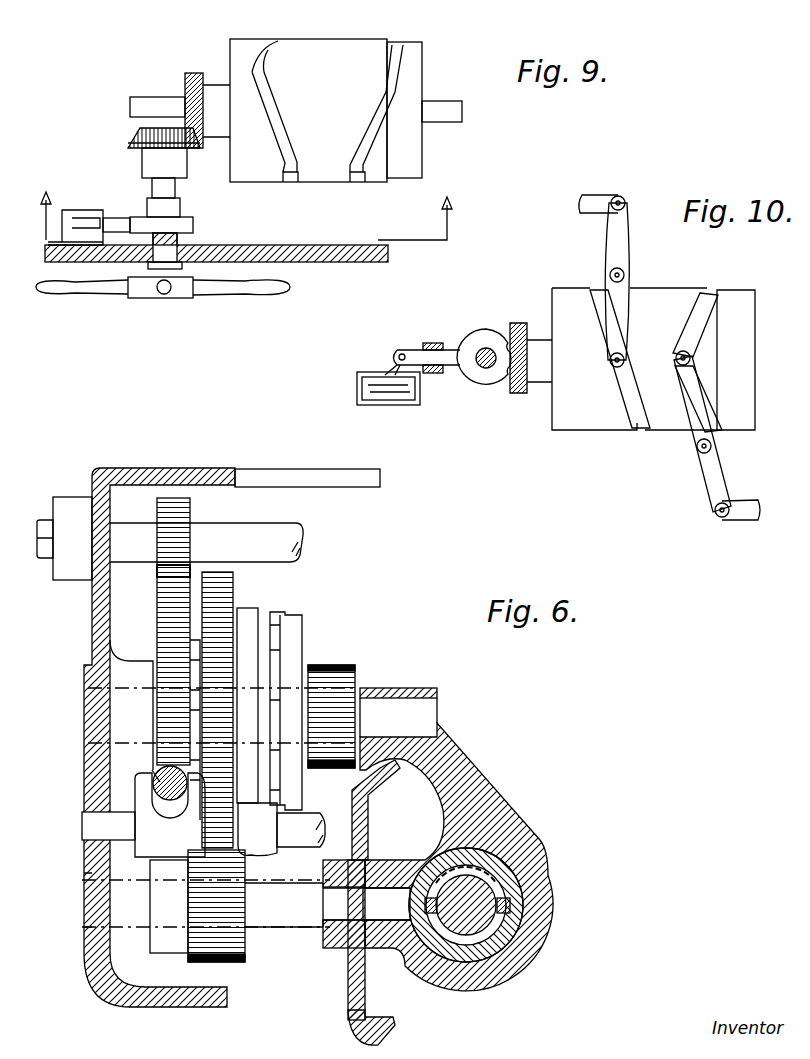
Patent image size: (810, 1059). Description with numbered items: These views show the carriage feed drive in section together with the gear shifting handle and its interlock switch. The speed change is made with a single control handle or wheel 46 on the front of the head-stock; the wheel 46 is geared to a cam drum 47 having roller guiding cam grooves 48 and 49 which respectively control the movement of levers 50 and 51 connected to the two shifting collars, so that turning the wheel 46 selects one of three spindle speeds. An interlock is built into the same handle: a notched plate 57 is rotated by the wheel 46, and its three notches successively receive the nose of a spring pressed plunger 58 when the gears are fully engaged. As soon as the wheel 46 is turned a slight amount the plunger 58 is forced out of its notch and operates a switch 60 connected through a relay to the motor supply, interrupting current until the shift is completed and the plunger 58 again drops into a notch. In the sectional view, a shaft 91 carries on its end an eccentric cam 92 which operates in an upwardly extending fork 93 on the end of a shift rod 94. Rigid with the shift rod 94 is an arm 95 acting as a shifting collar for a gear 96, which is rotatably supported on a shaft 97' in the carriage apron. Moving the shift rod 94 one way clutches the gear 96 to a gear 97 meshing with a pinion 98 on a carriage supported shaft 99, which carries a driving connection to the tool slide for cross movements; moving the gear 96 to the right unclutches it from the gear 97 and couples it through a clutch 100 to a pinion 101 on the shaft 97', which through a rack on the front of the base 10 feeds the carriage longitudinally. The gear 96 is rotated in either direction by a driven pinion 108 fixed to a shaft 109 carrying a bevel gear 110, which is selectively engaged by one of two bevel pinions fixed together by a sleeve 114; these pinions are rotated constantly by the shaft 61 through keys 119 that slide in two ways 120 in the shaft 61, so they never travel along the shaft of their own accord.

In FIG. 9, the base 10 is at (257, 198).
In FIG. 9, the control handle or wheel 46 is at (216, 296).
In FIG. 9, the cam drum 47 is at (346, 99).
In FIG. 10, the cam drum 47 is at (672, 288).
In FIG. 9, the cam groove 48 is at (272, 102).
In FIG. 10, the cam groove 48 is at (628, 405).
In FIG. 9, the cam groove 49 is at (380, 112).
In FIG. 10, the cam groove 49 is at (696, 320).
In FIG. 10, the lever 50 is at (612, 238).
In FIG. 10, the lever 51 is at (705, 473).
In FIG. 9, the notched plate 57 is at (195, 225).
In FIG. 10, the notched plate 57 is at (484, 332).
In FIG. 9, the spring pressed plunger 58 is at (138, 208).
In FIG. 10, the spring pressed plunger 58 is at (418, 350).
In FIG. 9, the switch 60 is at (70, 212).
In FIG. 10, the switch 60 is at (357, 388).
In FIG. 6, the shaft 61 is at (478, 880).
In FIG. 6, the shaft 91 is at (158, 770).
In FIG. 6, the eccentric cam 92 is at (172, 802).
In FIG. 6, the fork 93 is at (135, 778).
In FIG. 6, the shift rod 94 is at (310, 825).
In FIG. 6, the arm 95 is at (248, 650).
In FIG. 6, the gear 96 is at (235, 582).
In FIG. 6, the gear 97 is at (398, 699).
In FIG. 6, the shaft 97' is at (155, 671).
In FIG. 6, the pinion 98 is at (192, 505).
In FIG. 6, the shaft 99 is at (50, 520).
In FIG. 6, the clutch 100 is at (298, 614).
In FIG. 6, the pinion 101 is at (332, 668).
In FIG. 6, the driven pinion 108 is at (240, 962).
In FIG. 6, the shaft 109 is at (299, 925).
In FIG. 6, the bevel gear 110 is at (352, 990).
In FIG. 6, the sleeve 114 is at (520, 930).
In FIG. 6, the key 119 is at (505, 895).
In FIG. 6, the way 120 is at (515, 915).